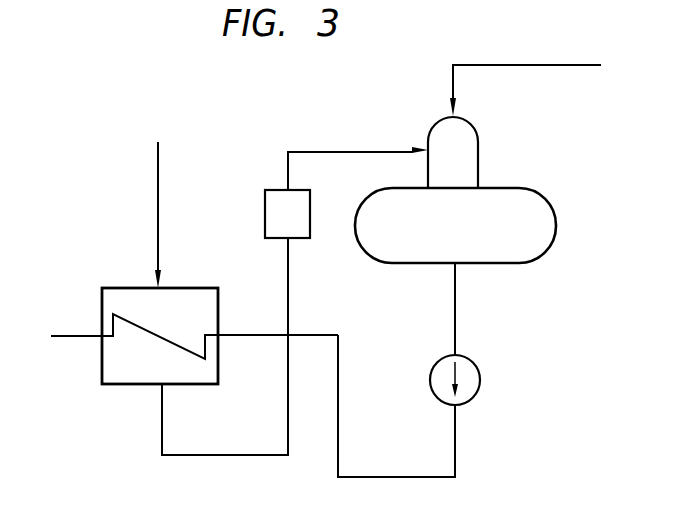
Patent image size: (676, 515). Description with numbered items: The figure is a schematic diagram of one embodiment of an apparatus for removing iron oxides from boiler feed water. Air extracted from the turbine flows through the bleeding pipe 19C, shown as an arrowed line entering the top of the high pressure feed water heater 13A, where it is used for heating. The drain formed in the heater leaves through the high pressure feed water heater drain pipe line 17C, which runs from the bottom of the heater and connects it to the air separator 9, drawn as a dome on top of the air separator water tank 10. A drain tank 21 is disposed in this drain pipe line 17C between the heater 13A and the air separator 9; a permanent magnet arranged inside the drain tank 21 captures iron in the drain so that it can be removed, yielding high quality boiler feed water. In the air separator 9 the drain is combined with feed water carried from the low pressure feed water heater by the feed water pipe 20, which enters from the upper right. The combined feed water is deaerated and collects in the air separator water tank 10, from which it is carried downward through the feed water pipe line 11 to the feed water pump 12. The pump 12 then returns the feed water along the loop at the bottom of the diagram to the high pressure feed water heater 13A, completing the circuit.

The feed water pipe 20 is at (518, 64).
The air separator 9 is at (468, 145).
The air separator water tank 10 is at (543, 229).
The feed water pipe line 11 is at (456, 313).
The feed water pump 12 is at (481, 380).
The high pressure feed water heater 13A is at (121, 288).
The bleeding pipe 19C is at (158, 165).
The high pressure feed water heater drain pipe line 17C is at (228, 456).
The drain tank 21 is at (264, 220).